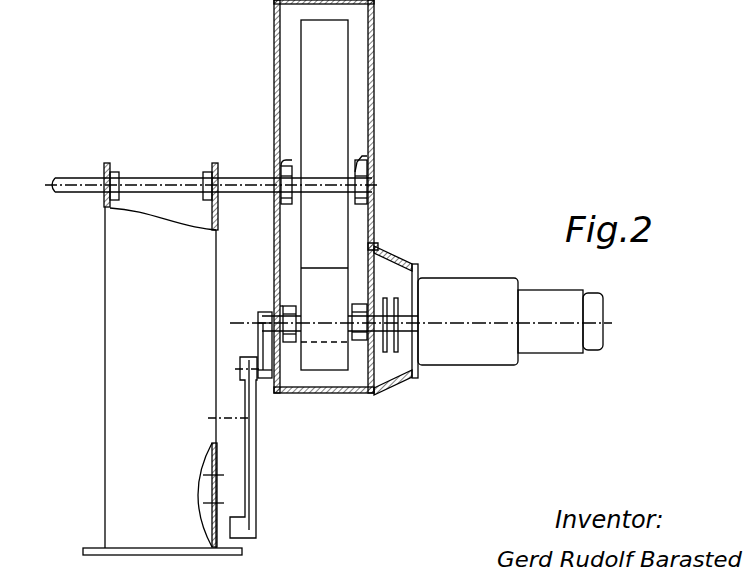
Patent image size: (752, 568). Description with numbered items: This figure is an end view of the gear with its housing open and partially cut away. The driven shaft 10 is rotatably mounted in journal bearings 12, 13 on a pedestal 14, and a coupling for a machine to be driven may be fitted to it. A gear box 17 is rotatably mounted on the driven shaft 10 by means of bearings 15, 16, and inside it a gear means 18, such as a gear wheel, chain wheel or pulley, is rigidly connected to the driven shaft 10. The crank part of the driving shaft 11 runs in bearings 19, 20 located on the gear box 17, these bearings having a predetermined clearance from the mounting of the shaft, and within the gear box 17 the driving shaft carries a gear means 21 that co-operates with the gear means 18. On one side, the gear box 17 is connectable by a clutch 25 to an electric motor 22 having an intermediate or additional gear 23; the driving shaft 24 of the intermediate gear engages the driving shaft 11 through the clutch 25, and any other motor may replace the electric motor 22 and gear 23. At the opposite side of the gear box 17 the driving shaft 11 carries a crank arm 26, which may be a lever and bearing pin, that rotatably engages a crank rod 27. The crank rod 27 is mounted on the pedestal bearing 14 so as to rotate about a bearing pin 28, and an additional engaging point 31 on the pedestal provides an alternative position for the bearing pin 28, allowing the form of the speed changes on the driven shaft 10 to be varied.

The driven shaft 10 is at (72, 182).
The crank part of the driving shaft 11 is at (295, 336).
The journal bearing 12 is at (112, 172).
The journal bearing 13 is at (205, 172).
The pedestal 14 is at (122, 265).
The bearing 15 is at (283, 176).
The bearing 16 is at (363, 177).
The gear box 17 is at (373, 89).
The gear means 18 is at (328, 58).
The bearing 19 is at (283, 313).
The bearing 20 is at (367, 305).
The gear means 21 is at (328, 358).
The electric motor 22 is at (557, 340).
The intermediate gear 23 is at (462, 355).
The driving shaft of the intermediate gear 24 is at (410, 317).
The clutch 25 is at (385, 350).
The crank arm 26 is at (258, 333).
The crank rod 27 is at (240, 418).
The bearing pin 28 is at (212, 528).
The engaging point 31 is at (210, 497).